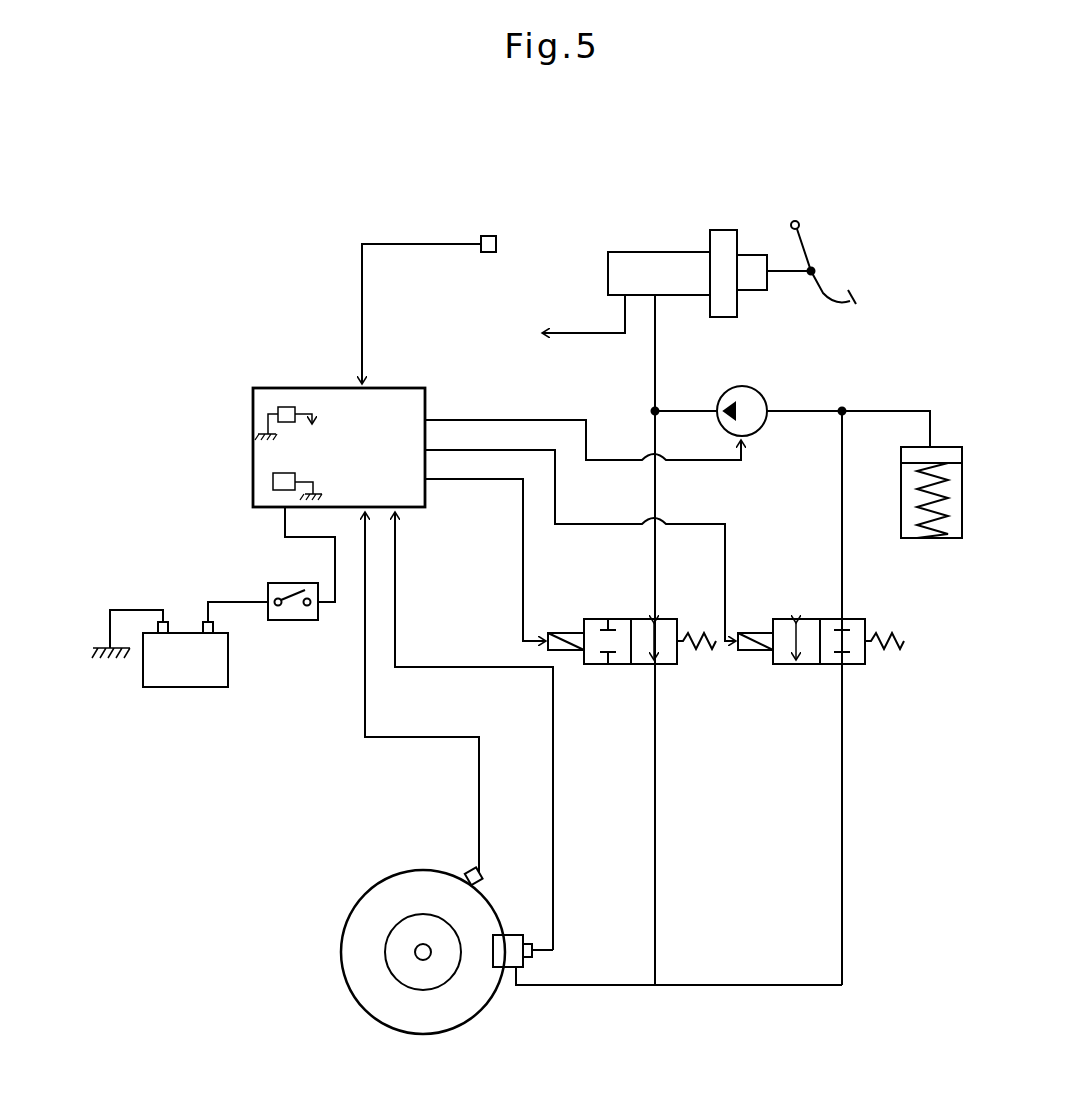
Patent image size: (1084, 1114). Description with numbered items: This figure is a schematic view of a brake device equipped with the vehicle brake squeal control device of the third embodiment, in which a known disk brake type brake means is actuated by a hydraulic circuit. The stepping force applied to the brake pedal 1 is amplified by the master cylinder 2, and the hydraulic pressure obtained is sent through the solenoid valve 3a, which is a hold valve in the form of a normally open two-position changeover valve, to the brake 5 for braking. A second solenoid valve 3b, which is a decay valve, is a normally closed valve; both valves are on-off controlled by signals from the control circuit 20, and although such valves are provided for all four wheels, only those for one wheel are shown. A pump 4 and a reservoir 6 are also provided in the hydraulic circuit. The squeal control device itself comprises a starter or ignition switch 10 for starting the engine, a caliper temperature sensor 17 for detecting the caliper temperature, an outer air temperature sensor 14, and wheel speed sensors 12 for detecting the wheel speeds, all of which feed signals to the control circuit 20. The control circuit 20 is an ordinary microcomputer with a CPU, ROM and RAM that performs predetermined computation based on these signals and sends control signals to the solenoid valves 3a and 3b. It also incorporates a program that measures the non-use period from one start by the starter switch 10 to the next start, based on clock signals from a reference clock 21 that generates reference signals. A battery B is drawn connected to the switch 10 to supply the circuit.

The brake pedal 1 is at (806, 252).
The master cylinder 2 is at (650, 260).
The solenoid valve 3a is at (621, 666).
The solenoid valve 3b is at (810, 666).
The pump 4 is at (763, 395).
The brake 5 is at (512, 935).
The reservoir 6 is at (900, 455).
The starter or ignition switch 10 is at (270, 583).
The wheel speed sensor 12 is at (468, 870).
The outer air temperature sensor 14 is at (488, 236).
The caliper temperature sensor 17 is at (535, 958).
The control circuit 20 is at (308, 386).
The reference clock 21 is at (268, 398).
The battery B is at (160, 648).